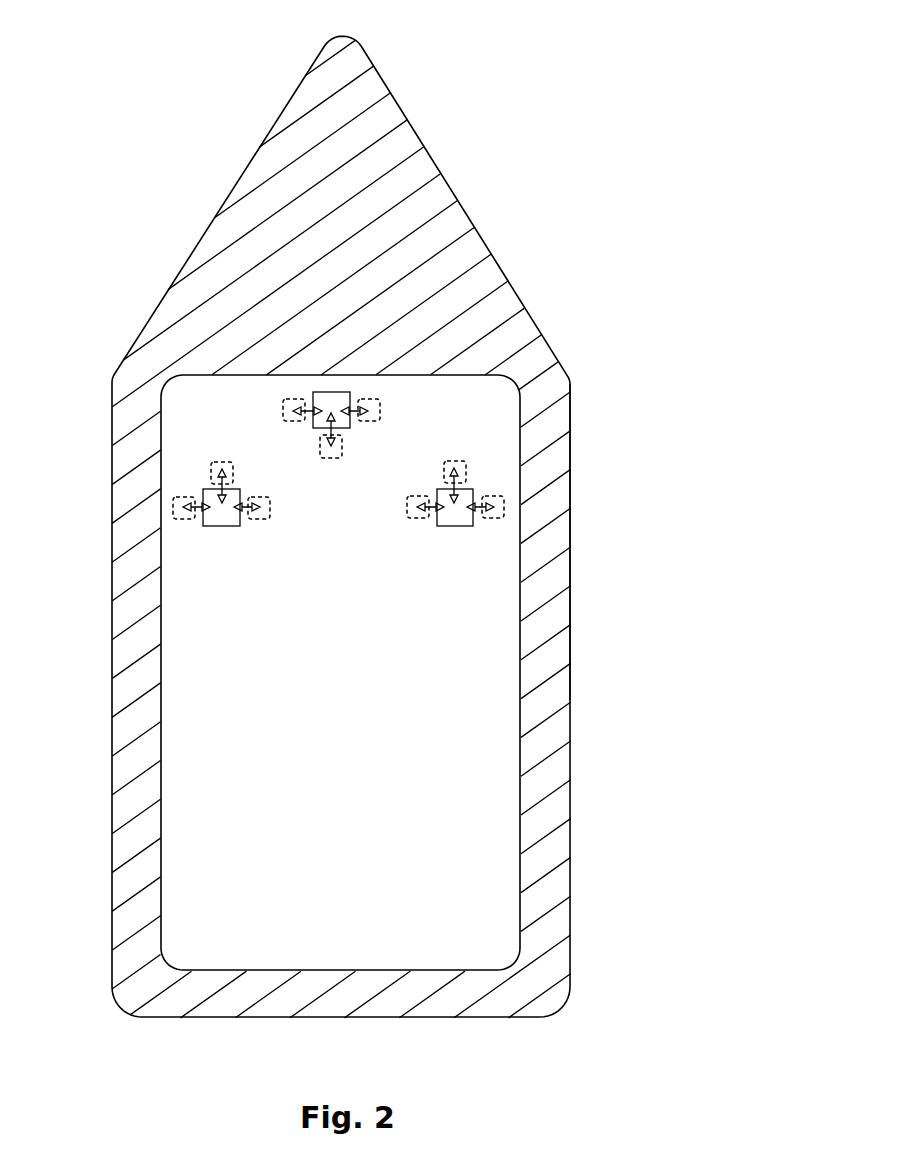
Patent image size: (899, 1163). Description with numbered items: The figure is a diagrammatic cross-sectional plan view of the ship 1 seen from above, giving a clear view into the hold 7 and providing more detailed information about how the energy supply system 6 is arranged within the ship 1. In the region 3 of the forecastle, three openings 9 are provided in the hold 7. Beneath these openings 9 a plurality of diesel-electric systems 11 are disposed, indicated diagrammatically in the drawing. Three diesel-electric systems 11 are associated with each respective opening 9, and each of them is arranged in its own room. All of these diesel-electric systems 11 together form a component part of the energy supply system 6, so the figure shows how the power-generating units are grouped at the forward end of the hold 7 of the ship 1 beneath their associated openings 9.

The ship 1 is at (160, 97).
The region of the forecastle 3 is at (640, 388).
The energy supply system 6 is at (323, 386).
The hold 7 is at (464, 694).
The opening 9 is at (348, 391).
The diesel-electric system 11 is at (289, 398).